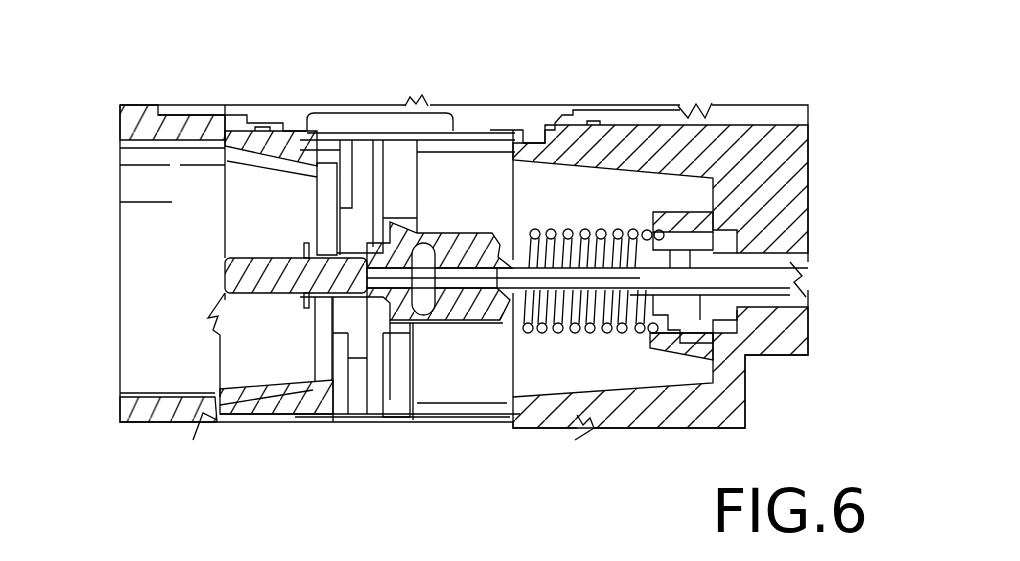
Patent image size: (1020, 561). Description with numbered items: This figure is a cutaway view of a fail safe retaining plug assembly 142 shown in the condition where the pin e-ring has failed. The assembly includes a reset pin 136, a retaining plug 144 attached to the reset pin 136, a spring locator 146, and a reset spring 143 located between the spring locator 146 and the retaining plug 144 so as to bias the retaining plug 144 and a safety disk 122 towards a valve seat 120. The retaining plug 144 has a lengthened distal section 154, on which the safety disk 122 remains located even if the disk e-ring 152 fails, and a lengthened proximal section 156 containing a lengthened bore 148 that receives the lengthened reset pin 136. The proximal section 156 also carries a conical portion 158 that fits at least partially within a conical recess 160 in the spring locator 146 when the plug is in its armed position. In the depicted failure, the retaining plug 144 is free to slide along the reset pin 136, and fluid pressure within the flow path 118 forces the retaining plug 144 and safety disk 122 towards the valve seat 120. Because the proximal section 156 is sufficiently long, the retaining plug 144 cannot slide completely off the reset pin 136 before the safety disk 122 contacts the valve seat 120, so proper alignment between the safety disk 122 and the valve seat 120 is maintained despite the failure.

The flow path 118 is at (243, 213).
The valve seat 120 is at (293, 143).
The safety disk 122 is at (362, 158).
The reset pin 136 is at (780, 283).
The fail safe retaining plug assembly 142 is at (600, 82).
The reset spring 143 is at (627, 330).
The retaining plug 144 is at (397, 323).
The spring locator 146 is at (663, 238).
The lengthened bore 148 is at (449, 318).
The disk e-ring 152 is at (305, 297).
The distal section 154 is at (245, 273).
The proximal section 156 is at (475, 310).
The conical portion 158 is at (503, 297).
The conical recess 160 is at (660, 293).